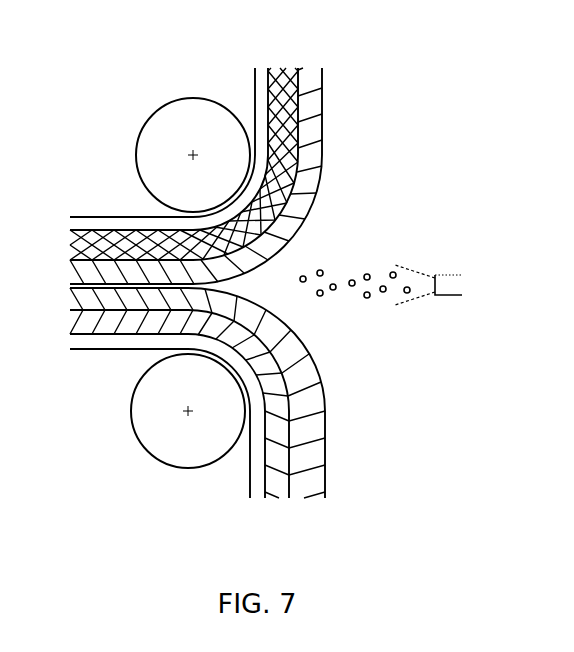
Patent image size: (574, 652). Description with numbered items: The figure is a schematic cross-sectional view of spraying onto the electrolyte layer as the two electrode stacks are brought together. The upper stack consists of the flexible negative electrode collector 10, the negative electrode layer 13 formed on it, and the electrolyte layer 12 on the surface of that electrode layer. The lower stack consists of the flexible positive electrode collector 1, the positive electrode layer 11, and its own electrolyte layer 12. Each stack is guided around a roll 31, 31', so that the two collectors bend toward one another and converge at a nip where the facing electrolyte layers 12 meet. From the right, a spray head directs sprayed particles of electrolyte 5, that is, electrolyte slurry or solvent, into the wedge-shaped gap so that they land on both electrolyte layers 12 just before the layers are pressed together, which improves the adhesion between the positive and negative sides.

The positive electrode collector 1 is at (93, 350).
The sprayed particles of electrolyte 5 is at (397, 264).
The negative electrode collector 10 is at (85, 213).
The positive electrode layer 11 is at (277, 497).
The electrolyte layer 12 is at (329, 99).
The negative electrode layer 13 is at (285, 63).
The roll 31 is at (188, 443).
The roll 31' is at (193, 123).